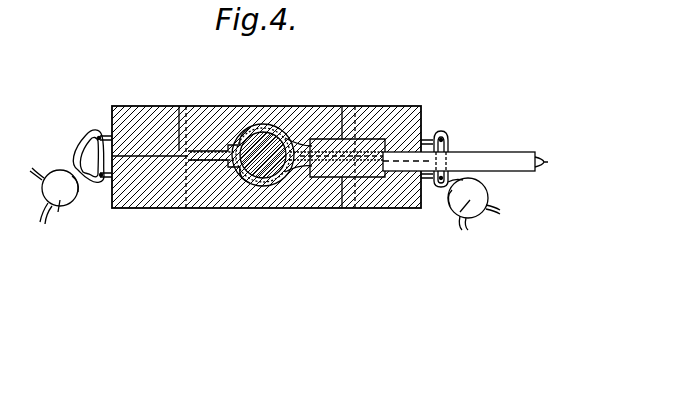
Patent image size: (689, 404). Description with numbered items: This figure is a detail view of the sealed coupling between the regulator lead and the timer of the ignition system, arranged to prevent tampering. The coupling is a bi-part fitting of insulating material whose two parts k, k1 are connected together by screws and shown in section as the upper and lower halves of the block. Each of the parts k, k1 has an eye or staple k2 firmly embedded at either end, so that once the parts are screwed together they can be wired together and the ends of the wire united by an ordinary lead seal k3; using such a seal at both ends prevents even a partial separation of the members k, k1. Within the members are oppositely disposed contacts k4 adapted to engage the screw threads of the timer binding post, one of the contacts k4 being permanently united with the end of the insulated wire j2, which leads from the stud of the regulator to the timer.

The fitting part k is at (215, 117).
The fitting part k1 is at (213, 203).
The eye or staple k2 is at (96, 132).
The lead seal k3 is at (63, 207).
The contact k4 is at (306, 133).
The insulated wire j2 is at (492, 152).